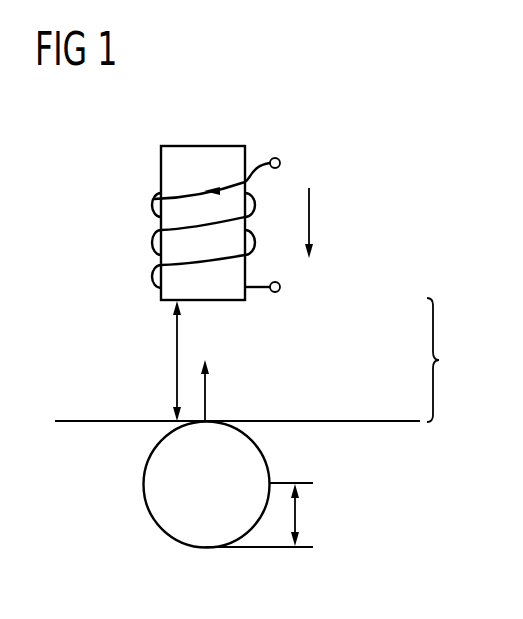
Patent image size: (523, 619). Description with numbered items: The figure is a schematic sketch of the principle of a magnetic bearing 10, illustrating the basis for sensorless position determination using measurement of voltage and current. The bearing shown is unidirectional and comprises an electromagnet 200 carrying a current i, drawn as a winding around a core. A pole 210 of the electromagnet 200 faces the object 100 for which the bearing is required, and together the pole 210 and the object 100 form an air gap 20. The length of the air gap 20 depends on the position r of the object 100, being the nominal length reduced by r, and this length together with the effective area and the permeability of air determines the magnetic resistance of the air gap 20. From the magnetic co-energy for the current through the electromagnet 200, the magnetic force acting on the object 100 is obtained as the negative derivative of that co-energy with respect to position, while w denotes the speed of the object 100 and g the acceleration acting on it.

The magnetic bearing 10 is at (398, 166).
The air gap 20 is at (450, 360).
The object 100 is at (143, 485).
The electromagnet 200 is at (157, 191).
The pole 210 is at (200, 145).